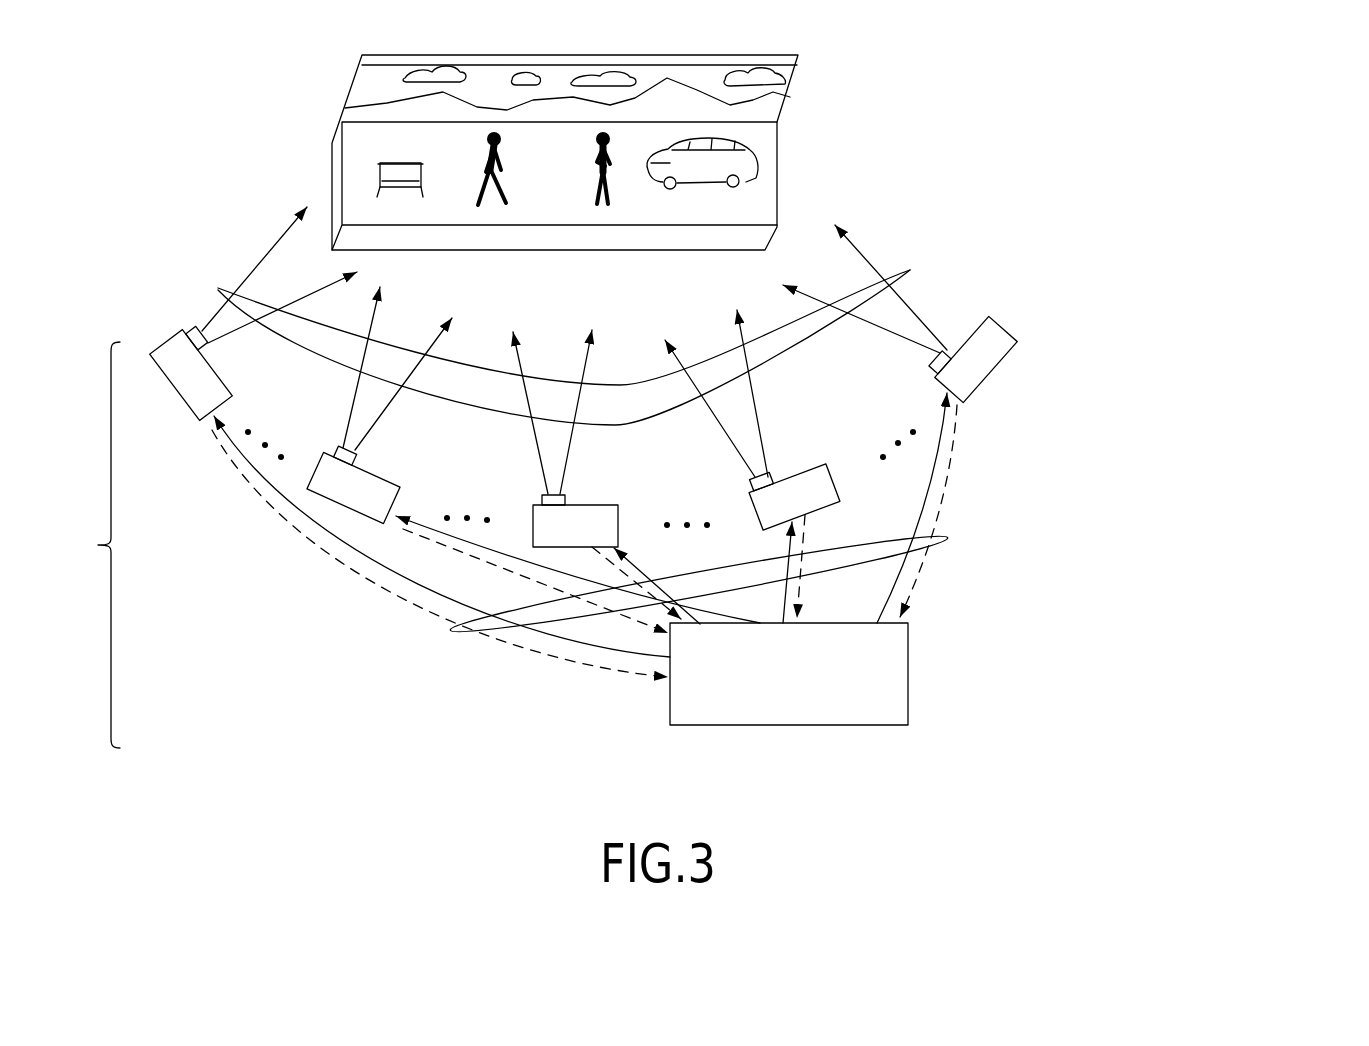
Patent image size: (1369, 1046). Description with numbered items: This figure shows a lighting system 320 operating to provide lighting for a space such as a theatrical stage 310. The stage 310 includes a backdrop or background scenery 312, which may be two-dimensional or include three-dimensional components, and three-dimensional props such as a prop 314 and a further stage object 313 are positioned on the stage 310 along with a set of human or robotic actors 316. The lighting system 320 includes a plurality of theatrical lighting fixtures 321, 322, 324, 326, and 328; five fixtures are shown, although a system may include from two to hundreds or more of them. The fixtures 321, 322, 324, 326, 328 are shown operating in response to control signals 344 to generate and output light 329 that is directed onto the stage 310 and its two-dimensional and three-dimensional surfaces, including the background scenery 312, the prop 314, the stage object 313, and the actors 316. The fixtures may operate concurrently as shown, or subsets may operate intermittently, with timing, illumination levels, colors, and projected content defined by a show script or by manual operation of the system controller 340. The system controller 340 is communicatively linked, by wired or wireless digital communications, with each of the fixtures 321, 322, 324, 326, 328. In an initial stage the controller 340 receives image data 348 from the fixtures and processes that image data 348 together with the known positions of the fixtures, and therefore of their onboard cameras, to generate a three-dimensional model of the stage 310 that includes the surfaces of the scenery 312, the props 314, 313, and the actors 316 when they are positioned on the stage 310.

The stage 310 is at (795, 173).
The background scenery 312 is at (777, 90).
The vehicle object in scene 313 is at (718, 184).
The 3D prop 314 is at (422, 171).
The actors 316 is at (594, 198).
The lighting system 320 is at (89, 545).
The theatrical lighting fixture 321 is at (983, 319).
The theatrical lighting fixture 322 is at (808, 464).
The theatrical lighting fixture 324 is at (602, 504).
The theatrical lighting fixture 326 is at (385, 476).
The theatrical lighting fixture 328 is at (178, 398).
The light 329 is at (220, 288).
The system controller 340 is at (908, 709).
The control signals 344 is at (1352, 549).
The image data 348 is at (633, 630).